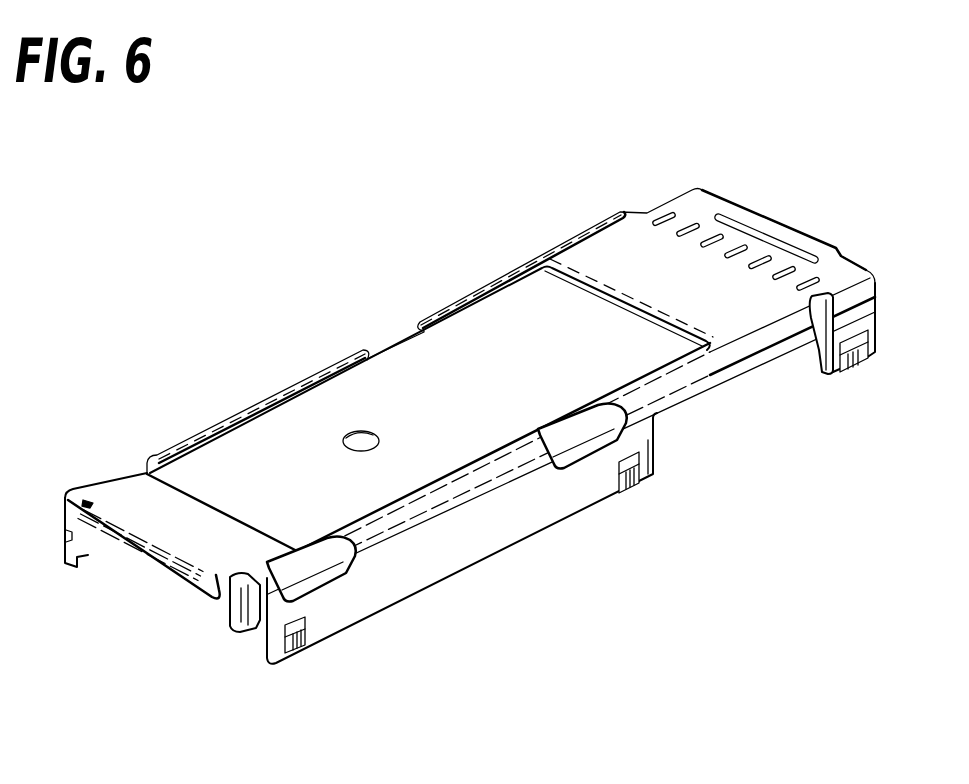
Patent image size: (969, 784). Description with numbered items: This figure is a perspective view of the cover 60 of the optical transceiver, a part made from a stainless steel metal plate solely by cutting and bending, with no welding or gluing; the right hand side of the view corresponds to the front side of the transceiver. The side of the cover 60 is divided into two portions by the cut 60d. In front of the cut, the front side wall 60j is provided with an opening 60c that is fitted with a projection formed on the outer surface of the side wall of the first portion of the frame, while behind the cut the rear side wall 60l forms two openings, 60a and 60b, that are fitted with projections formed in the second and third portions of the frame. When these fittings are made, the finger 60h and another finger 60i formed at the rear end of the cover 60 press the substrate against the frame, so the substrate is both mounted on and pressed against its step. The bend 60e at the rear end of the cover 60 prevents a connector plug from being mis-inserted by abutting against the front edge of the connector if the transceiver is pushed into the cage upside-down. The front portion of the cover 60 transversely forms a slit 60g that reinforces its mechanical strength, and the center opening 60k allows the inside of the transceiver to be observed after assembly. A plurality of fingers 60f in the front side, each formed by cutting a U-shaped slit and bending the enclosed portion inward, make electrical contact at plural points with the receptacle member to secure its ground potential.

The cover 60 is at (289, 316).
The opening 60a is at (300, 630).
The opening 60b is at (653, 472).
The opening 60c is at (838, 373).
The cut 60d is at (733, 422).
The bend 60e is at (142, 569).
The fingers 60f is at (655, 216).
The slit 60g is at (765, 230).
The finger 60h is at (345, 570).
The finger 60i is at (76, 570).
The front side wall 60j is at (823, 327).
The center opening 60k is at (345, 443).
The rear side wall 60l is at (440, 543).